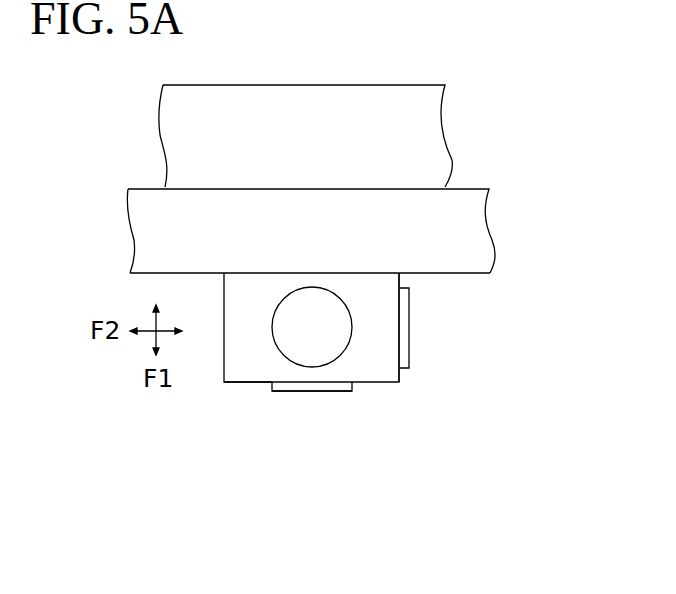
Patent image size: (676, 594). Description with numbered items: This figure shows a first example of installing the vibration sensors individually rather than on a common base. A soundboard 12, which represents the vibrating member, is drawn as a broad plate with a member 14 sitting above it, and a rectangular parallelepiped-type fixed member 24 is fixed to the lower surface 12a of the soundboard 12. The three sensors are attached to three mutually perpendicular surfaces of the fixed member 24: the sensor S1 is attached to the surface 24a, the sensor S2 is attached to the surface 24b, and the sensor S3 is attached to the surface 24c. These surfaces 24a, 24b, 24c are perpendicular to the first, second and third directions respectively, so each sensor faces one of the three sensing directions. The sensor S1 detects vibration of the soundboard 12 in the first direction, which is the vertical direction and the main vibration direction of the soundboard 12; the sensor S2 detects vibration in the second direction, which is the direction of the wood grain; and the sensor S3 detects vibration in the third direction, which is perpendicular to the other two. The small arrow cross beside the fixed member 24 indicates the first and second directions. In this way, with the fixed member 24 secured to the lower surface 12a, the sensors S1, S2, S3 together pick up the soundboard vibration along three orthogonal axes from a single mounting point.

The upper member 14 is at (412, 93).
The soundboard 12 is at (152, 198).
The lower surface 12a is at (432, 273).
The fixed member 24 is at (222, 385).
The surface 24a is at (258, 385).
The surface 24b is at (402, 377).
The surface 24c is at (252, 367).
The sensor S1 is at (315, 392).
The sensor S2 is at (410, 325).
The sensor S3 is at (342, 341).